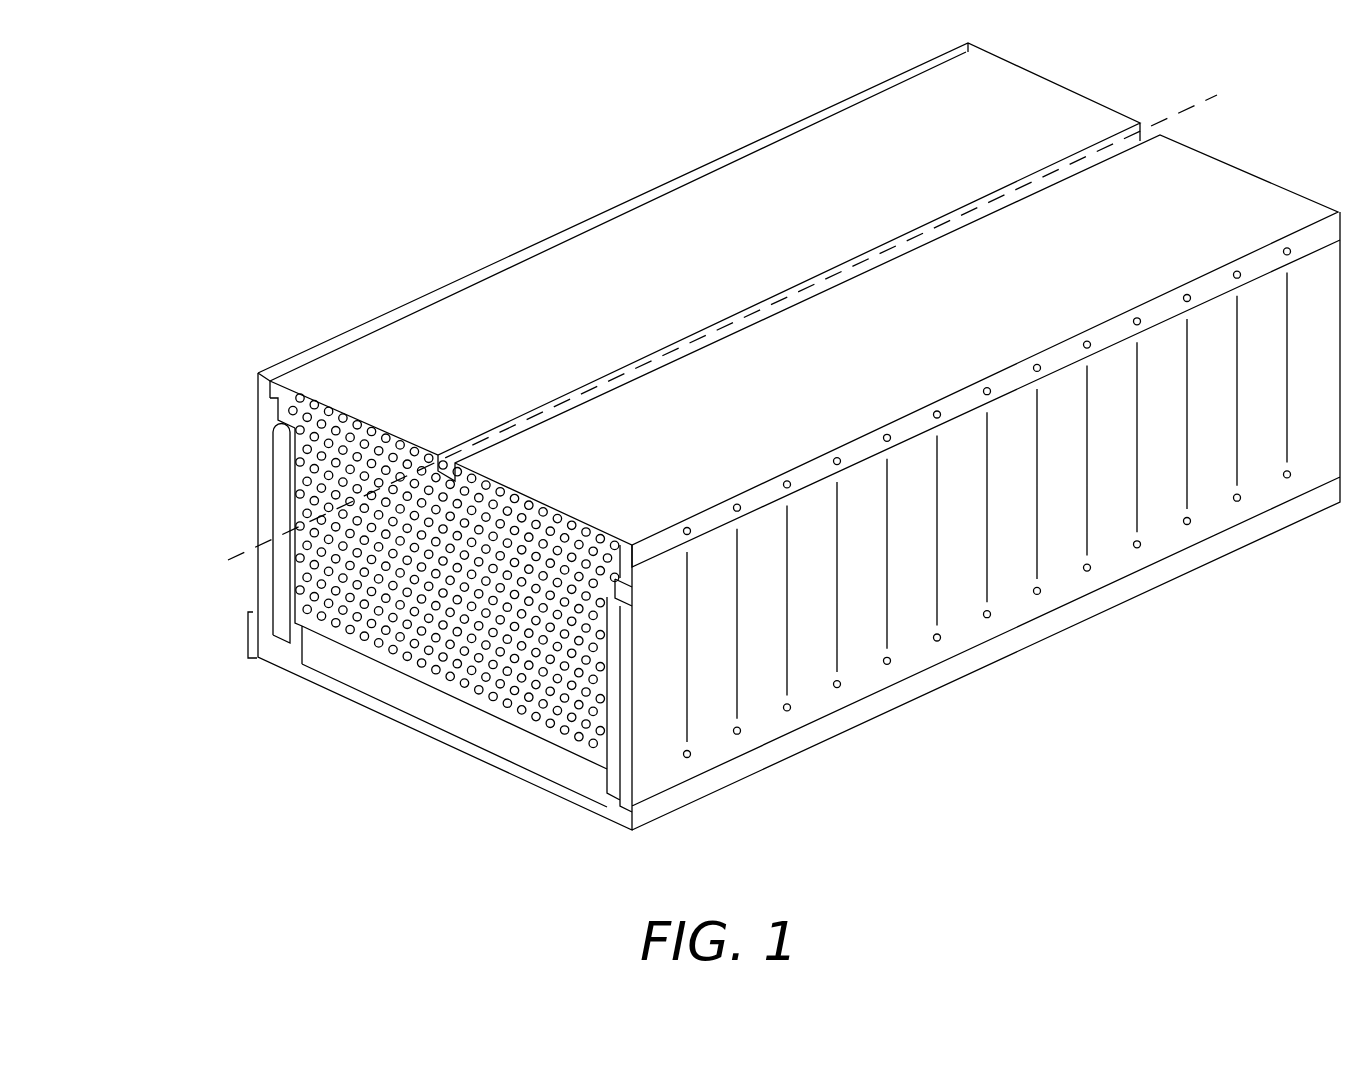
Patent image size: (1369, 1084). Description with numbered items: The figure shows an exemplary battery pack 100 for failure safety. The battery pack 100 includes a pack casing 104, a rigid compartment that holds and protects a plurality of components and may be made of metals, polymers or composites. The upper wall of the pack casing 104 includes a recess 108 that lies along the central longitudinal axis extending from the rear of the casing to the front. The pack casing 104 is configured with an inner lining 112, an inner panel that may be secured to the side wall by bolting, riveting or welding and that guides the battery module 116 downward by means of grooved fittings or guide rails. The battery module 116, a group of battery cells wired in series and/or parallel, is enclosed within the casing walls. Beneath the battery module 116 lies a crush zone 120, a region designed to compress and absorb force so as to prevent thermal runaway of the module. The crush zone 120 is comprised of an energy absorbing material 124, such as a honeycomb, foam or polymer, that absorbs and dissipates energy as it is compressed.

The battery pack 100 is at (363, 218).
The pack casing 104 is at (1020, 650).
The recess 108 is at (784, 305).
The inner lining 112 is at (268, 526).
The battery module 116 is at (276, 405).
The crush zone 120 is at (247, 642).
The energy absorbing material 124 is at (375, 702).